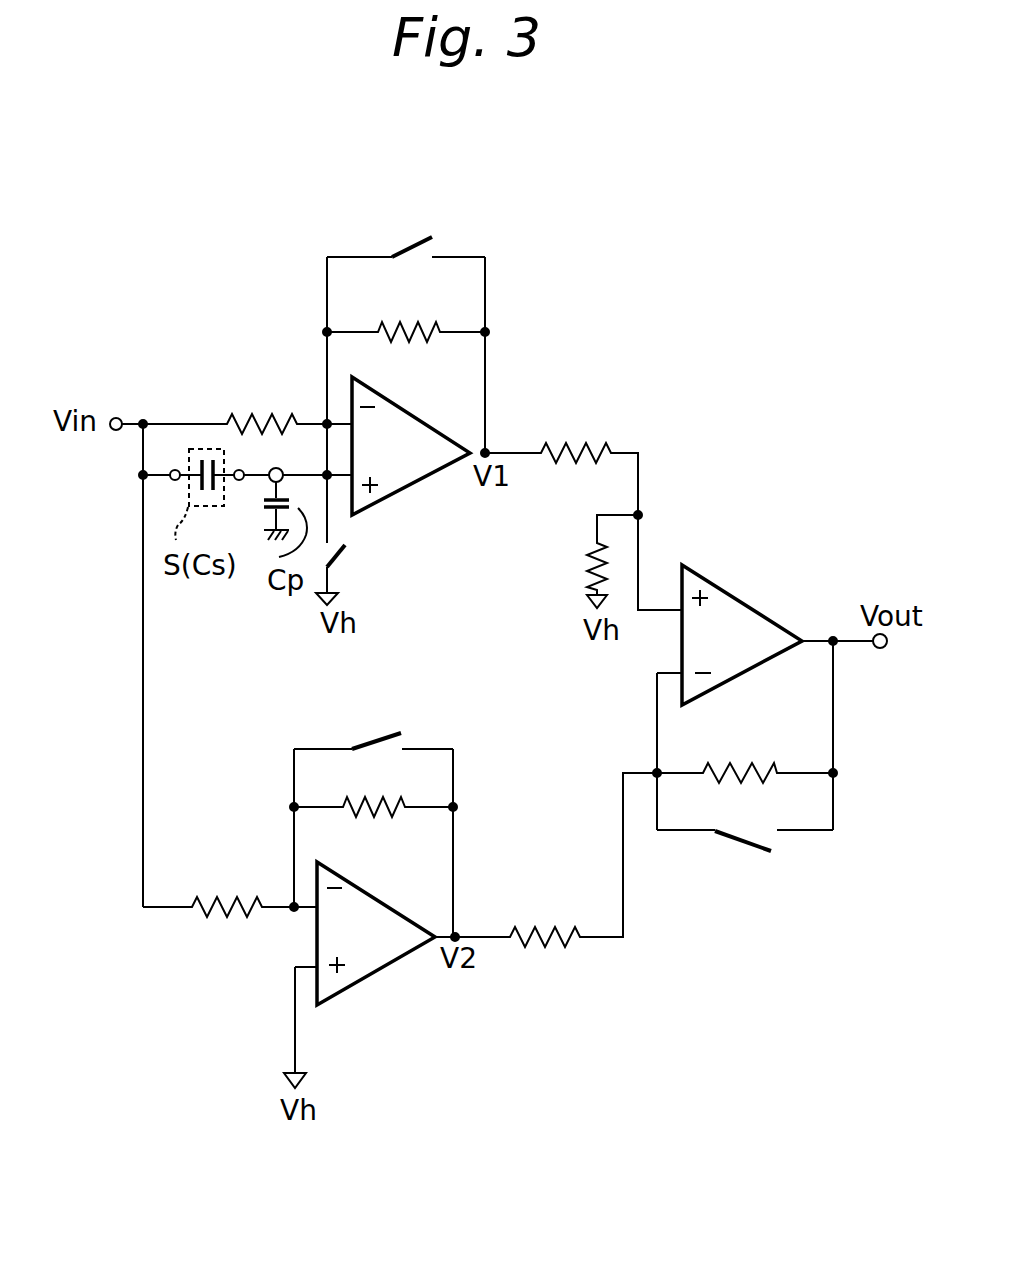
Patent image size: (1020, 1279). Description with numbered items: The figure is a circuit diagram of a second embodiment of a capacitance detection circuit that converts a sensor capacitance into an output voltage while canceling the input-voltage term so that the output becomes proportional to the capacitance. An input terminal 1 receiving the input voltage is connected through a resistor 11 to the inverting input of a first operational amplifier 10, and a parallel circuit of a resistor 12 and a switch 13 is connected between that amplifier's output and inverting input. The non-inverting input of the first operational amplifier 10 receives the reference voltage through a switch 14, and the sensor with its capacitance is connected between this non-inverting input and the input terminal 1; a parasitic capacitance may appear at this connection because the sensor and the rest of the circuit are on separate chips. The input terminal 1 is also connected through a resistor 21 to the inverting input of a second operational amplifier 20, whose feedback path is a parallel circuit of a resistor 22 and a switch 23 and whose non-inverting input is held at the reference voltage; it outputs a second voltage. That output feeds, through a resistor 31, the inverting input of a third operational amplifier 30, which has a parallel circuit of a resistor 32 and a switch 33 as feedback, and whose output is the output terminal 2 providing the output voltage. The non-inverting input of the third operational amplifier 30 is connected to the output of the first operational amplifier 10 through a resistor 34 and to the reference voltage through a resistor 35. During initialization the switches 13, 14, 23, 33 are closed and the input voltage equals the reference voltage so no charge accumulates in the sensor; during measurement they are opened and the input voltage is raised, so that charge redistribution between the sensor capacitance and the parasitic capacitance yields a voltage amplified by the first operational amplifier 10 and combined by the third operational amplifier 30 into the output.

The input terminal 1 is at (115, 432).
The output terminal 2 is at (880, 649).
The first operational amplifier 10 is at (412, 487).
The resistor 11 is at (236, 413).
The resistor 12 is at (398, 327).
The switch 13 is at (406, 242).
The switch 14 is at (344, 552).
The second operational amplifier 20 is at (387, 967).
The resistor 21 is at (226, 918).
The resistor 22 is at (360, 805).
The switch 23 is at (372, 735).
The third operational amplifier 30 is at (743, 603).
The resistor 31 is at (540, 948).
The resistor 32 is at (765, 768).
The switch 33 is at (740, 843).
The resistor 34 is at (570, 441).
The resistor 35 is at (582, 587).